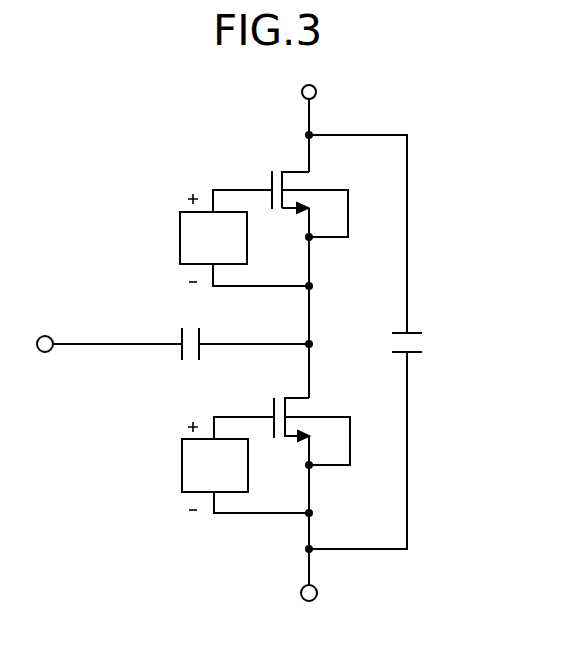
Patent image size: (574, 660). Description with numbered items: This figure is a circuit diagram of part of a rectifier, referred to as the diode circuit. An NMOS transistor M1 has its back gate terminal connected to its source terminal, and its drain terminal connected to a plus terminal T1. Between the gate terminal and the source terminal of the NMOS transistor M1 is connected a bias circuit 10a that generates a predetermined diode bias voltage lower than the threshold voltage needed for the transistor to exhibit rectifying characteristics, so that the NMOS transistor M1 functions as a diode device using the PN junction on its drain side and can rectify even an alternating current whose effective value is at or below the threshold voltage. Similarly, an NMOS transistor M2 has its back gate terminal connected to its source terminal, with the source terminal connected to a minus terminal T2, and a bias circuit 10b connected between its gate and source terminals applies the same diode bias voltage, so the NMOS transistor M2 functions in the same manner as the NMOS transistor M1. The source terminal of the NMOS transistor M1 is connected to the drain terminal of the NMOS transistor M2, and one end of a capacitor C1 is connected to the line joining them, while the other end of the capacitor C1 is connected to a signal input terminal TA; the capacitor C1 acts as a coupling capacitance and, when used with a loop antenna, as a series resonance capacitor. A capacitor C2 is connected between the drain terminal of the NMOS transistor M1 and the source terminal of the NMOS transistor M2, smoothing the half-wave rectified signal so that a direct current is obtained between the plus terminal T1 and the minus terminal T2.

The plus terminal T1 is at (317, 91).
The minus terminal T2 is at (319, 592).
The signal input terminal TA is at (47, 336).
The NMOS transistor M1 is at (281, 169).
The NMOS transistor M2 is at (303, 412).
The capacitor C1 is at (190, 327).
The capacitor C2 is at (423, 343).
The bias circuit 10a is at (180, 237).
The bias circuit 10b is at (182, 467).